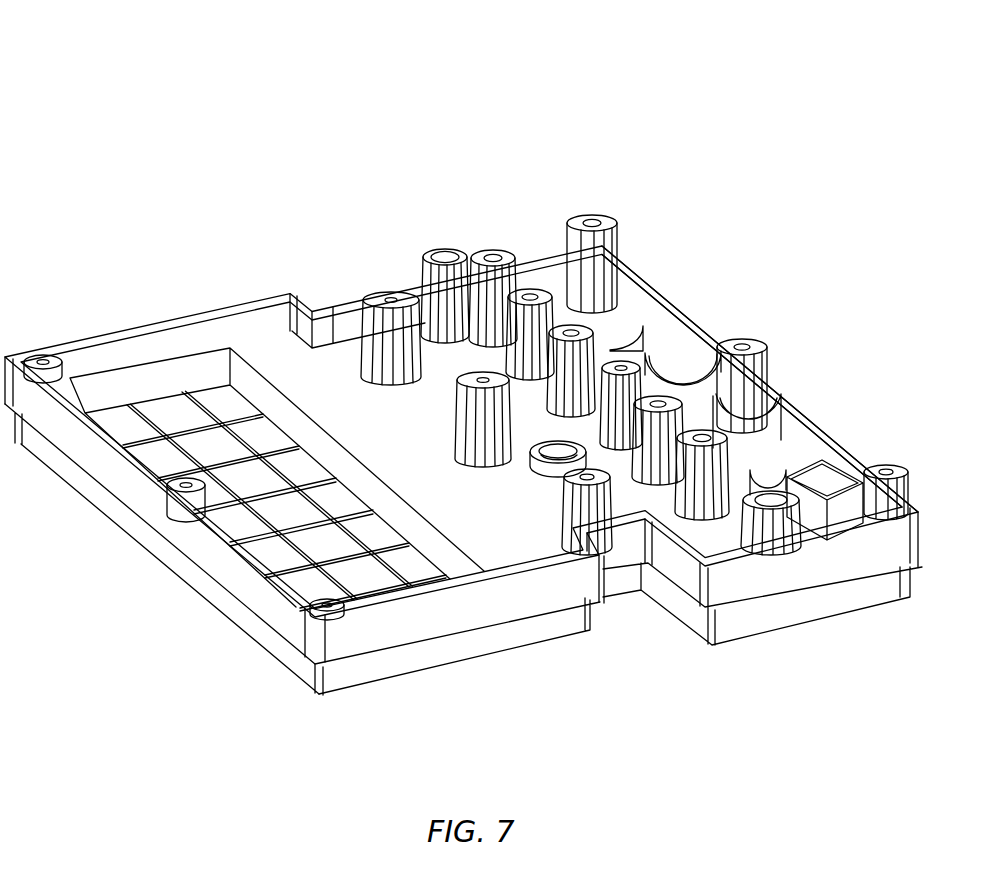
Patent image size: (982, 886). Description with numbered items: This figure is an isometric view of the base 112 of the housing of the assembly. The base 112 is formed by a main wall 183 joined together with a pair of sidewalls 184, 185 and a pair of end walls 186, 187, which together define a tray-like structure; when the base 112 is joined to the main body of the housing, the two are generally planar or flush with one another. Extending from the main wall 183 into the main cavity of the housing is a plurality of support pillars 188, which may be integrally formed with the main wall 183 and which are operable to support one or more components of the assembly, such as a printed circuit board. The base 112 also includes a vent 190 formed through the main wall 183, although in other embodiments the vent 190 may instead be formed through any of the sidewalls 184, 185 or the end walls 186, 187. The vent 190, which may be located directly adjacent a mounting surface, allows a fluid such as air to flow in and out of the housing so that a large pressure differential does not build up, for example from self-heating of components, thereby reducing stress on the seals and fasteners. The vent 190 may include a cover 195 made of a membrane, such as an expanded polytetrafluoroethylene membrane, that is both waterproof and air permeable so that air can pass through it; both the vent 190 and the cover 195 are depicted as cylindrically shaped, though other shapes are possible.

The base 112 is at (259, 112).
The main wall 183 is at (288, 348).
The sidewall 184 is at (147, 539).
The sidewall 185 is at (683, 313).
The end wall 186 is at (348, 300).
The end wall 187 is at (563, 625).
The support pillars 188 is at (401, 298).
The vent 190 is at (557, 484).
The cover 195 is at (555, 453).